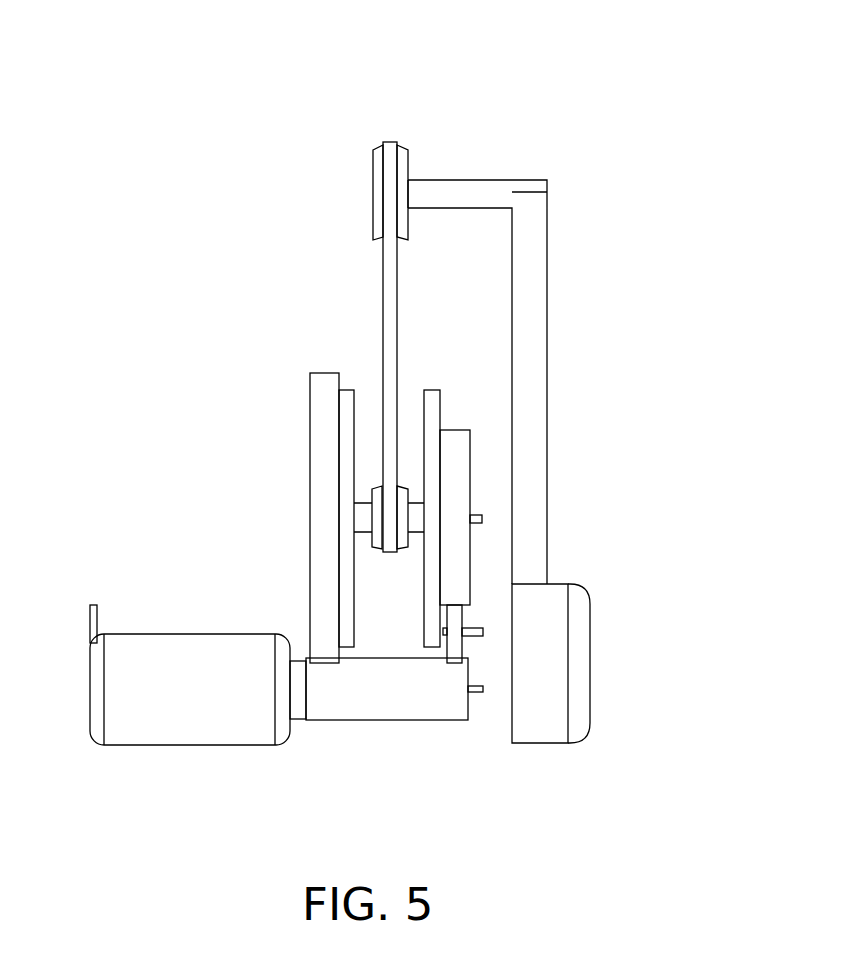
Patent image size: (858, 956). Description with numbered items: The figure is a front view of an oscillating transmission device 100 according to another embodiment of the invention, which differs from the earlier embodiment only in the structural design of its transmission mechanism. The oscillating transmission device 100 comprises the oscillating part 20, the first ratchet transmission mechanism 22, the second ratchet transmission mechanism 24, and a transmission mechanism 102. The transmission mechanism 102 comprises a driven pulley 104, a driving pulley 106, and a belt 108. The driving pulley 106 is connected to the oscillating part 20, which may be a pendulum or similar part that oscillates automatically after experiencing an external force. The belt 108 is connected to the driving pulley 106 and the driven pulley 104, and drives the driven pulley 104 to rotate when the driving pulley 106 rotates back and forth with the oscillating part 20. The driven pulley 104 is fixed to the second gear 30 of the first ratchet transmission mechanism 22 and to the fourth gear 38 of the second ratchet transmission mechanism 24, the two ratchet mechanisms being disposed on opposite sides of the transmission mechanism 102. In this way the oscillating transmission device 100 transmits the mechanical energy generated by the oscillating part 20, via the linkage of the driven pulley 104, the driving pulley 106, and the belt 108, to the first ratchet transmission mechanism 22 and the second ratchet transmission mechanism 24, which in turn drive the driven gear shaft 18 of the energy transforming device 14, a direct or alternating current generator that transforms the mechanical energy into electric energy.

The oscillating transmission device 100 is at (706, 122).
The transmission mechanism 102 is at (278, 117).
The driven pulley 104 is at (377, 510).
The driving pulley 106 is at (373, 152).
The belt 108 is at (386, 293).
The energy transforming device 14 is at (172, 730).
The driven gear shaft 18 is at (378, 713).
The oscillating part 20 is at (557, 717).
The first ratchet transmission mechanism 22 is at (337, 359).
The second ratchet transmission mechanism 24 is at (462, 377).
The second gear 30 is at (347, 400).
The fourth gear 38 is at (437, 400).